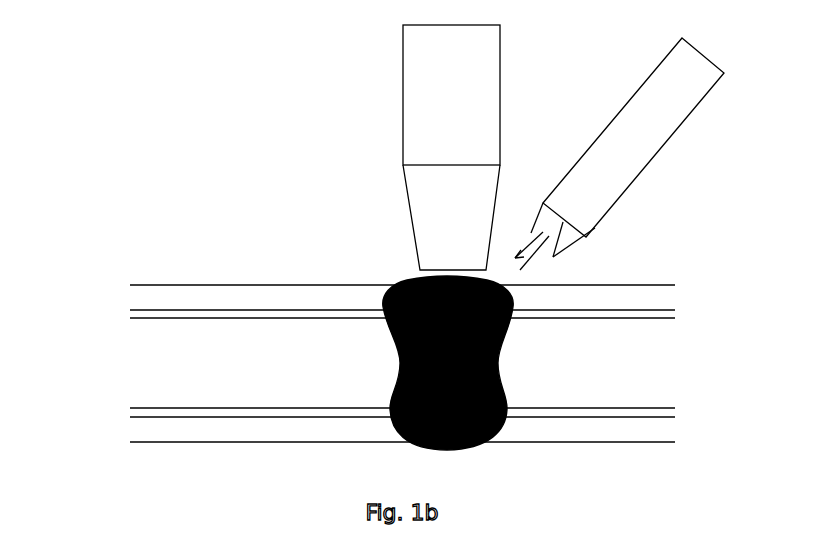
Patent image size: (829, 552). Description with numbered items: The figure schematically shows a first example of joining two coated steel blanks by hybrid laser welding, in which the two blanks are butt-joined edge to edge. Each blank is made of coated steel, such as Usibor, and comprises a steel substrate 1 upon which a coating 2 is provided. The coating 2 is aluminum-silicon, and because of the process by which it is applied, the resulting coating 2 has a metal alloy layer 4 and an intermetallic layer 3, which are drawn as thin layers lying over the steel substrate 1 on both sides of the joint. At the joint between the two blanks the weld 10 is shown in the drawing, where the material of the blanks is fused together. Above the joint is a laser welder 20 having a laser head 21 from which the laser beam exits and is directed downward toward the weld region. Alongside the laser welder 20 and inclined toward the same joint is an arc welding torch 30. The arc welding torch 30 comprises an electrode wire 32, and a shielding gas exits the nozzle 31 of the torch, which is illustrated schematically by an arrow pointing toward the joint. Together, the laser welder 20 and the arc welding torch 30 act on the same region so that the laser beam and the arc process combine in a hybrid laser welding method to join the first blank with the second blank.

The steel substrate 1 is at (143, 372).
The coating 2 is at (355, 289).
The intermetallic layer 3 is at (140, 313).
The metal alloy layer 4 is at (182, 295).
The weld seam 10 is at (400, 283).
The laser welder 20 is at (435, 93).
The laser head 21 is at (435, 190).
The arc welding torch 30 is at (652, 120).
The nozzle 31 is at (527, 240).
The electrode wire 32 is at (540, 257).